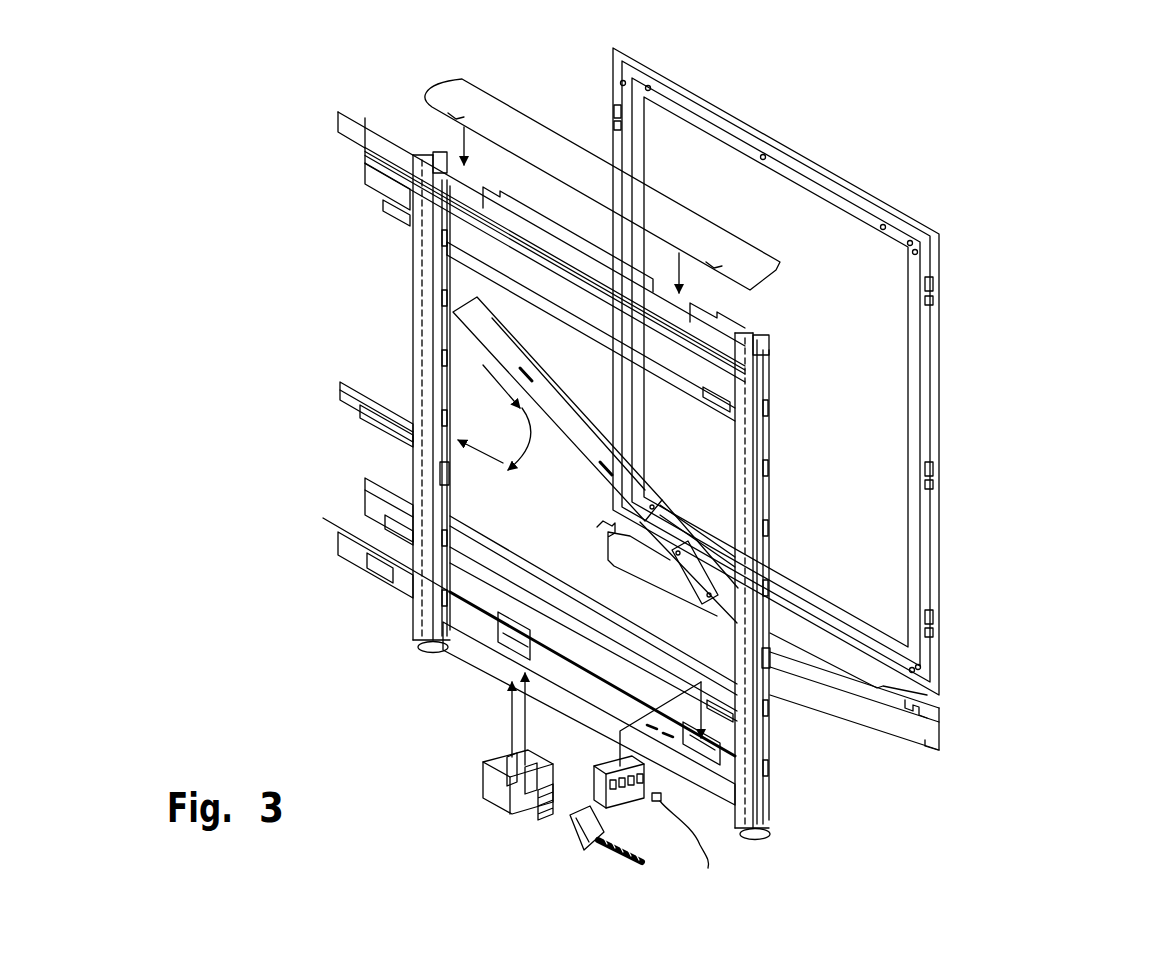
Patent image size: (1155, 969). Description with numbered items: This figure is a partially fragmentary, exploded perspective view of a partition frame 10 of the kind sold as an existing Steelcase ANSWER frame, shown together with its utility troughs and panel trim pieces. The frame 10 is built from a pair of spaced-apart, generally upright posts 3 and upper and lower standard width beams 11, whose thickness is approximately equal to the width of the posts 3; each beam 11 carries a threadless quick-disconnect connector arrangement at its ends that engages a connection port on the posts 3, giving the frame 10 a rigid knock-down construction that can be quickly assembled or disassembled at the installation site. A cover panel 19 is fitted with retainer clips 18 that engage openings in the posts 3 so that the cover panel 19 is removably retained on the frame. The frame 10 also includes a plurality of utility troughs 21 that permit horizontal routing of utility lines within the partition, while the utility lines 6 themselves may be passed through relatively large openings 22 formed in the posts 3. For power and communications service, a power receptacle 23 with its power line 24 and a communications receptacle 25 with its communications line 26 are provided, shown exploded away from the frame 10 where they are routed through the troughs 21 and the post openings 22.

The upright post 3 is at (413, 348).
The utility line 6 is at (323, 520).
The partition frame 10 is at (1022, 221).
The standard width beam 11 is at (378, 191).
The retainer clip 18 is at (933, 285).
The cover panel 19 is at (939, 386).
The utility trough 21 is at (353, 413).
The opening 22 is at (433, 580).
The power receptacle 23 is at (493, 810).
The power line 24 is at (575, 845).
The communications receptacle 25 is at (592, 770).
The communications line 26 is at (690, 817).